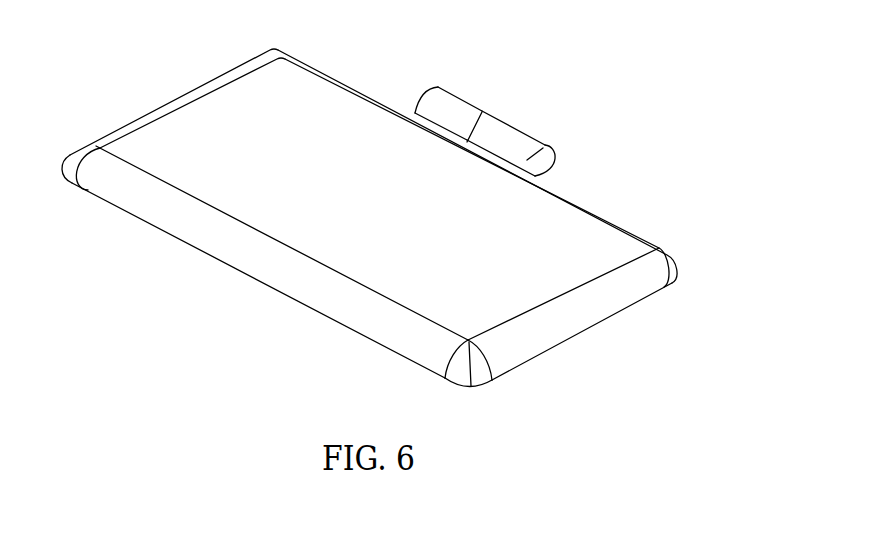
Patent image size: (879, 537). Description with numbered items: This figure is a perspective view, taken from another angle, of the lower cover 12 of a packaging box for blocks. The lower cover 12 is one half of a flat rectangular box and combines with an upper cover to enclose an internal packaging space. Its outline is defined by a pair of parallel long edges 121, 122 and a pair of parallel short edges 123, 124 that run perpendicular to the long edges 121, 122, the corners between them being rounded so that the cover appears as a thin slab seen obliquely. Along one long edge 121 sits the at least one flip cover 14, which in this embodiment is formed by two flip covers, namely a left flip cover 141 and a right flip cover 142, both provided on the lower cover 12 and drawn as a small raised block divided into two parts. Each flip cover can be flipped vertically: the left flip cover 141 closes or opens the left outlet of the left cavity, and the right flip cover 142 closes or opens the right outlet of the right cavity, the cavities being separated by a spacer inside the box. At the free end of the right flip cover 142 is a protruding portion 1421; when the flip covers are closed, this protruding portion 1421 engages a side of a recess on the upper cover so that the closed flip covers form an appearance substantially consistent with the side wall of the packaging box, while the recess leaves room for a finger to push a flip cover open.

The lower cover 12 is at (374, 200).
The long edge 121 is at (613, 222).
The long edge 122 is at (252, 277).
The short edge 123 is at (175, 100).
The short edge 124 is at (585, 329).
The flip cover 14 is at (523, 120).
The left flip cover 141 is at (443, 110).
The right flip cover 142 is at (549, 147).
The protruding portion 1421 is at (547, 158).